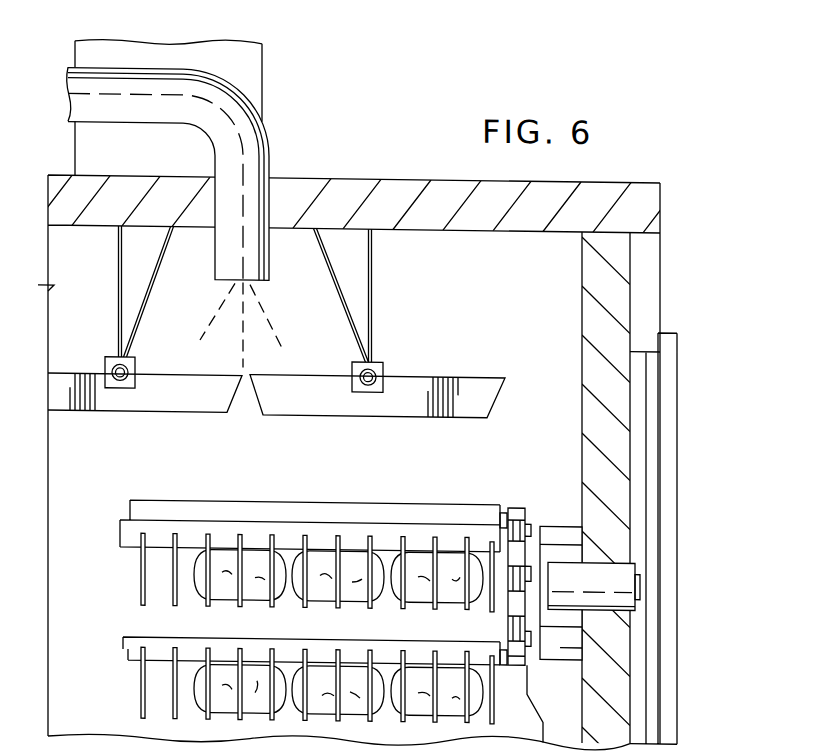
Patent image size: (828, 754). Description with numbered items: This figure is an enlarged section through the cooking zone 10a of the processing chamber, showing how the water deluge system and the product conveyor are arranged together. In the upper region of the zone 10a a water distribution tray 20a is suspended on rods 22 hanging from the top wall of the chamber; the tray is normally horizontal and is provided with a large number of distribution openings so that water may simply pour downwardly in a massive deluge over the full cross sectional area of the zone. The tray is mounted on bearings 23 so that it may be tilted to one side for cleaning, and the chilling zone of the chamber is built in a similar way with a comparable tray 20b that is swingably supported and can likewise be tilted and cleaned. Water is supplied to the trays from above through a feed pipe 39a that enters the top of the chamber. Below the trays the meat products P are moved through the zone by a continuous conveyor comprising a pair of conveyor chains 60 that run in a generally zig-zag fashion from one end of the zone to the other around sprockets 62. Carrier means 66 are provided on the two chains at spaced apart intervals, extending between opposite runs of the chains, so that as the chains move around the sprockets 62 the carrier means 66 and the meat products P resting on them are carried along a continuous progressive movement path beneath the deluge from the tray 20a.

The first zone for cooking 10a is at (694, 164).
The product feed tube 39a is at (250, 129).
The rods 22 is at (372, 281).
The bearings 23 is at (375, 368).
The water distribution tray 20a is at (152, 410).
The water distribution tray 20b is at (408, 412).
The meat products P is at (425, 569).
The sprockets 62 is at (527, 516).
The carrier means 66 is at (130, 696).
The conveyor chains 60 is at (560, 630).